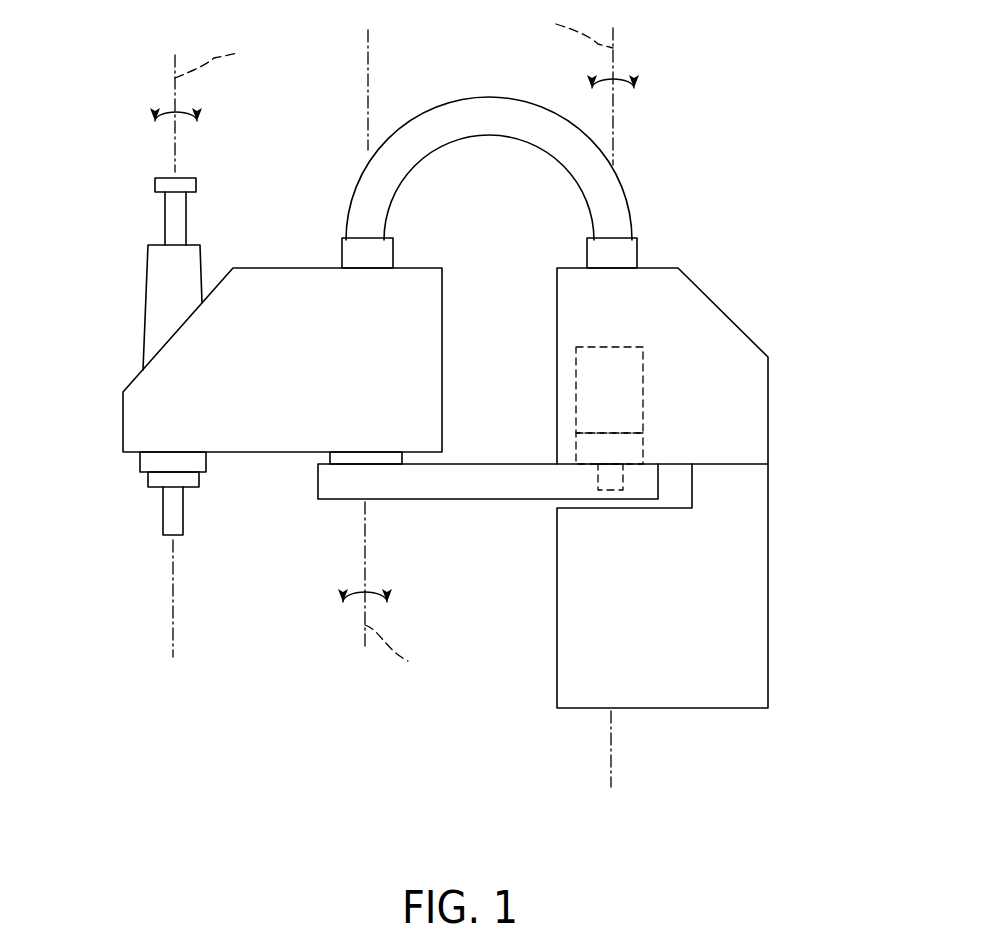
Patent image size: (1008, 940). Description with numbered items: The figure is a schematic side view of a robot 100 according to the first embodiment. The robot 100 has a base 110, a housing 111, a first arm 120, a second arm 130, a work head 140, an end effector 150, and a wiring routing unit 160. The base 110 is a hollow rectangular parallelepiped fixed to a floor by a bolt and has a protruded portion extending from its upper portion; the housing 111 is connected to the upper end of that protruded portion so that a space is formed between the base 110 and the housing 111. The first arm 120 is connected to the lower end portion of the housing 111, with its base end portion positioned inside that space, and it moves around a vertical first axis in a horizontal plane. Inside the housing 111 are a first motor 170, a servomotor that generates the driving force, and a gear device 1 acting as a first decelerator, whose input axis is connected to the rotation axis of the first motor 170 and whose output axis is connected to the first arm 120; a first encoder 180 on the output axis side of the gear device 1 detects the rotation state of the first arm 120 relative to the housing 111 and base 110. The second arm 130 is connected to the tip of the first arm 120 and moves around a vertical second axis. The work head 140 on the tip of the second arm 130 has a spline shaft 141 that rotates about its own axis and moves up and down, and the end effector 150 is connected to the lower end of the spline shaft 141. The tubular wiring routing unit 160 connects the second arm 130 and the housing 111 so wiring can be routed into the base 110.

The robot 100 is at (676, 65).
The base 110 is at (774, 580).
The housing 111 is at (774, 388).
The first arm 120 is at (431, 505).
The second arm 130 is at (446, 298).
The work head 140 is at (146, 284).
The spline shaft 141 is at (173, 213).
The end effector 150 is at (163, 515).
The wiring routing unit 160 is at (465, 112).
The first motor 170 is at (575, 395).
The first encoder 180 is at (643, 452).
The gear device 1 is at (575, 453).